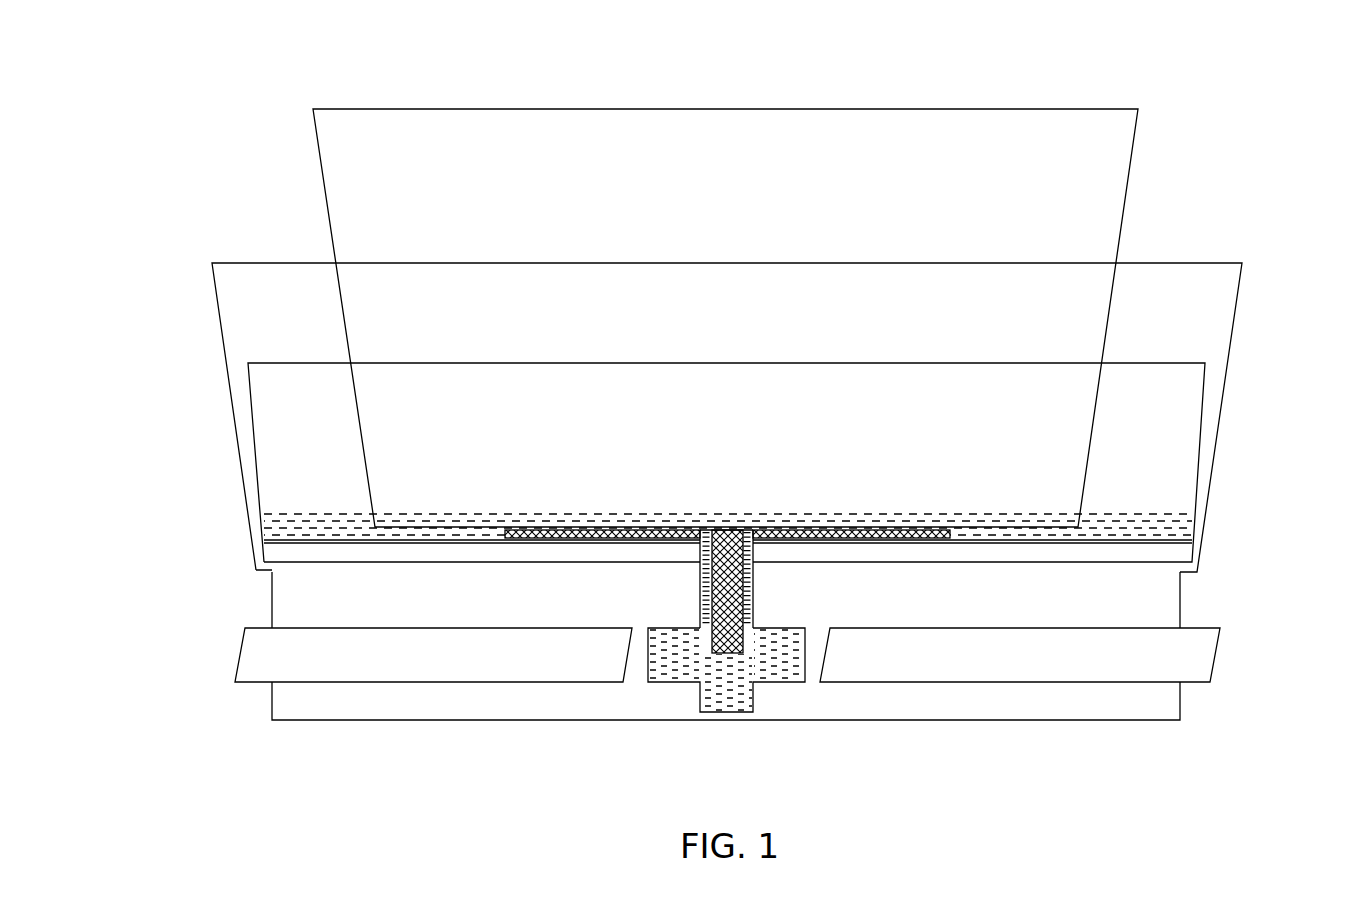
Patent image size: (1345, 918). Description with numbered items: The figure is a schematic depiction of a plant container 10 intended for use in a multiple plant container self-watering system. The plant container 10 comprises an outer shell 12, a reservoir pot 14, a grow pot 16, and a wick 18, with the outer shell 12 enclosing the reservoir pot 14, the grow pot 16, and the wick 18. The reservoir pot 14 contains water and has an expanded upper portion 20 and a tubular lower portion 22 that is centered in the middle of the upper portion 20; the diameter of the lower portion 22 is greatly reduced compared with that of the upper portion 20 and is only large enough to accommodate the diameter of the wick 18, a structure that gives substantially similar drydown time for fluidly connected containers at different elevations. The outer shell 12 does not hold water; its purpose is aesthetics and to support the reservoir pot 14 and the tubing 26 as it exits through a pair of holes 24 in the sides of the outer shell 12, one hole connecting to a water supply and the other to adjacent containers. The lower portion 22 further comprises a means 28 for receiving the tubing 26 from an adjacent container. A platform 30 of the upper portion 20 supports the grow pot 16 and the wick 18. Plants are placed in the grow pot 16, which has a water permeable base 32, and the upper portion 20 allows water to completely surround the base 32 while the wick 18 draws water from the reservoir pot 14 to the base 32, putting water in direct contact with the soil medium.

The plant container 10 is at (731, 62).
The outer shell 12 is at (214, 285).
The reservoir pot 14 is at (249, 378).
The grow pot 16 is at (1135, 145).
The wick 18 is at (725, 632).
The upper portion 20 is at (262, 440).
The lower portion 22 is at (703, 582).
The pair of holes 24 is at (270, 682).
The tubing 26 is at (248, 655).
The means for receiving the tubing 28 is at (767, 650).
The platform 30 is at (270, 548).
The water permeable base 32 is at (1060, 527).